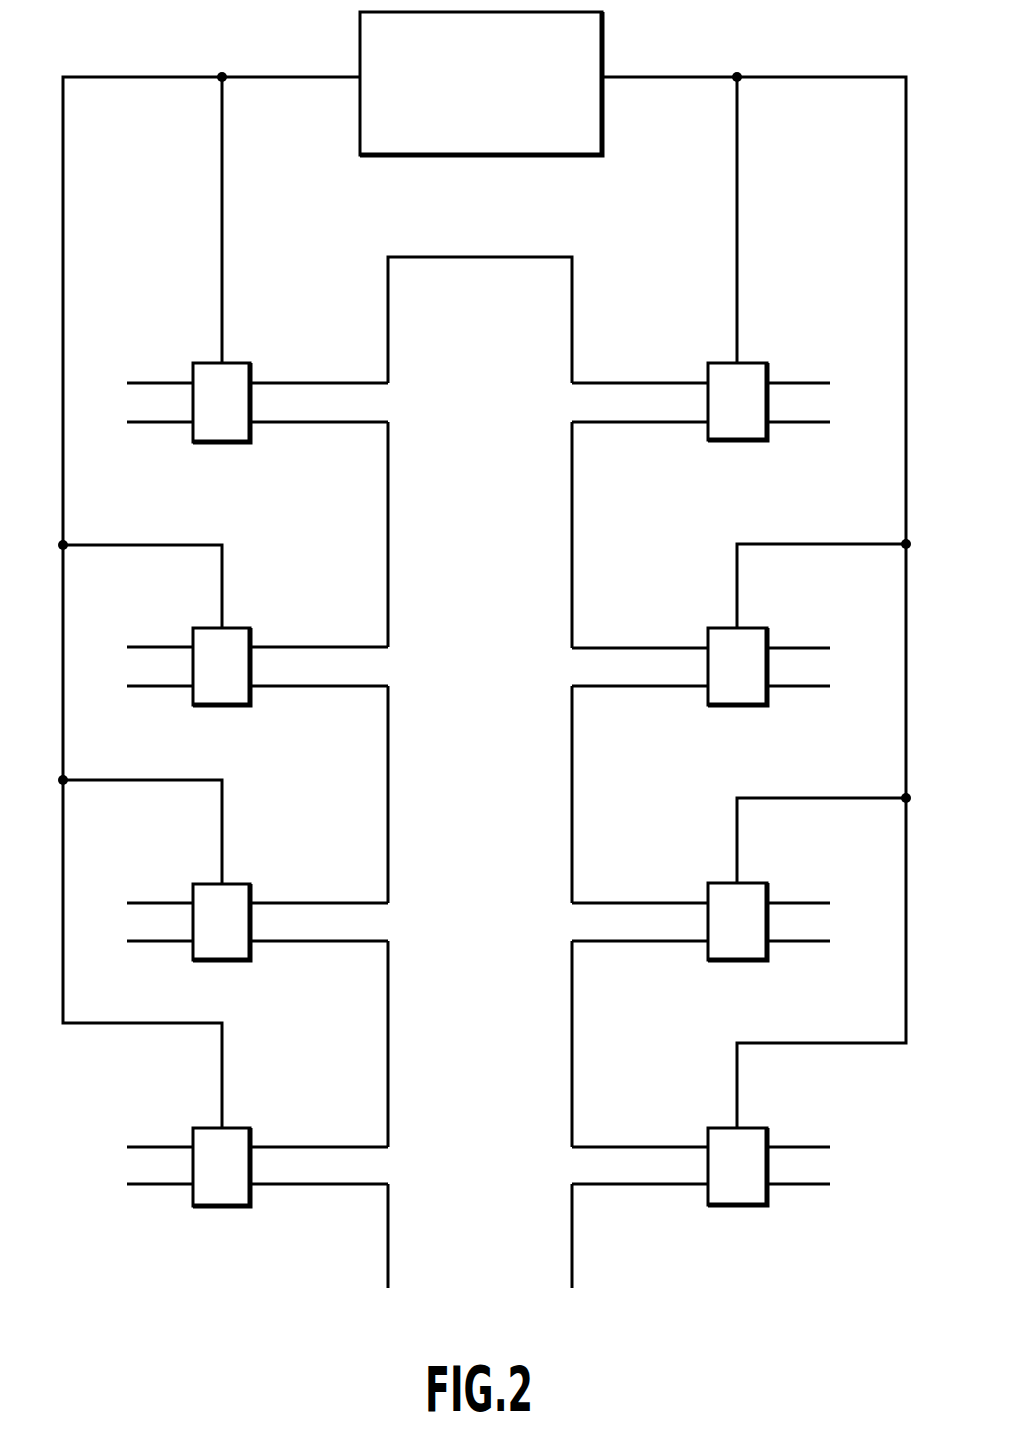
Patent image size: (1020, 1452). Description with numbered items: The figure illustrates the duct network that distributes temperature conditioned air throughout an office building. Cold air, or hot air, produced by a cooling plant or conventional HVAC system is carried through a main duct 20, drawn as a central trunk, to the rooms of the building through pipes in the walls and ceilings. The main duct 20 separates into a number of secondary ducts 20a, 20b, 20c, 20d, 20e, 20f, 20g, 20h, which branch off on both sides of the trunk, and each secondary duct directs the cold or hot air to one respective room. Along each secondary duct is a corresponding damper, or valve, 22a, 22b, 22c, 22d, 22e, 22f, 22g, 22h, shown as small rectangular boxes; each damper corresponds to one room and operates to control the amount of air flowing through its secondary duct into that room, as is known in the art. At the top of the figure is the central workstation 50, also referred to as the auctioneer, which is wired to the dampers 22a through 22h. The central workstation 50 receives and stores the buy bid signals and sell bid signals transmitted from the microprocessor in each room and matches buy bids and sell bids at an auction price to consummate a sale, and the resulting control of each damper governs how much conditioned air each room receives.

The central workstation 50 is at (602, 110).
The main duct 20 is at (392, 1242).
The secondary duct 20a is at (308, 1147).
The secondary duct 20b is at (305, 903).
The secondary duct 20c is at (297, 647).
The secondary duct 20d is at (312, 383).
The secondary duct 20e is at (600, 383).
The secondary duct 20f is at (598, 648).
The secondary duct 20g is at (598, 903).
The secondary duct 20h is at (605, 1147).
The damper 22a is at (193, 1135).
The damper 22b is at (193, 890).
The damper 22c is at (193, 638).
The damper 22d is at (193, 365).
The damper 22e is at (767, 440).
The damper 22f is at (767, 705).
The damper 22g is at (767, 960).
The damper 22h is at (767, 1205).